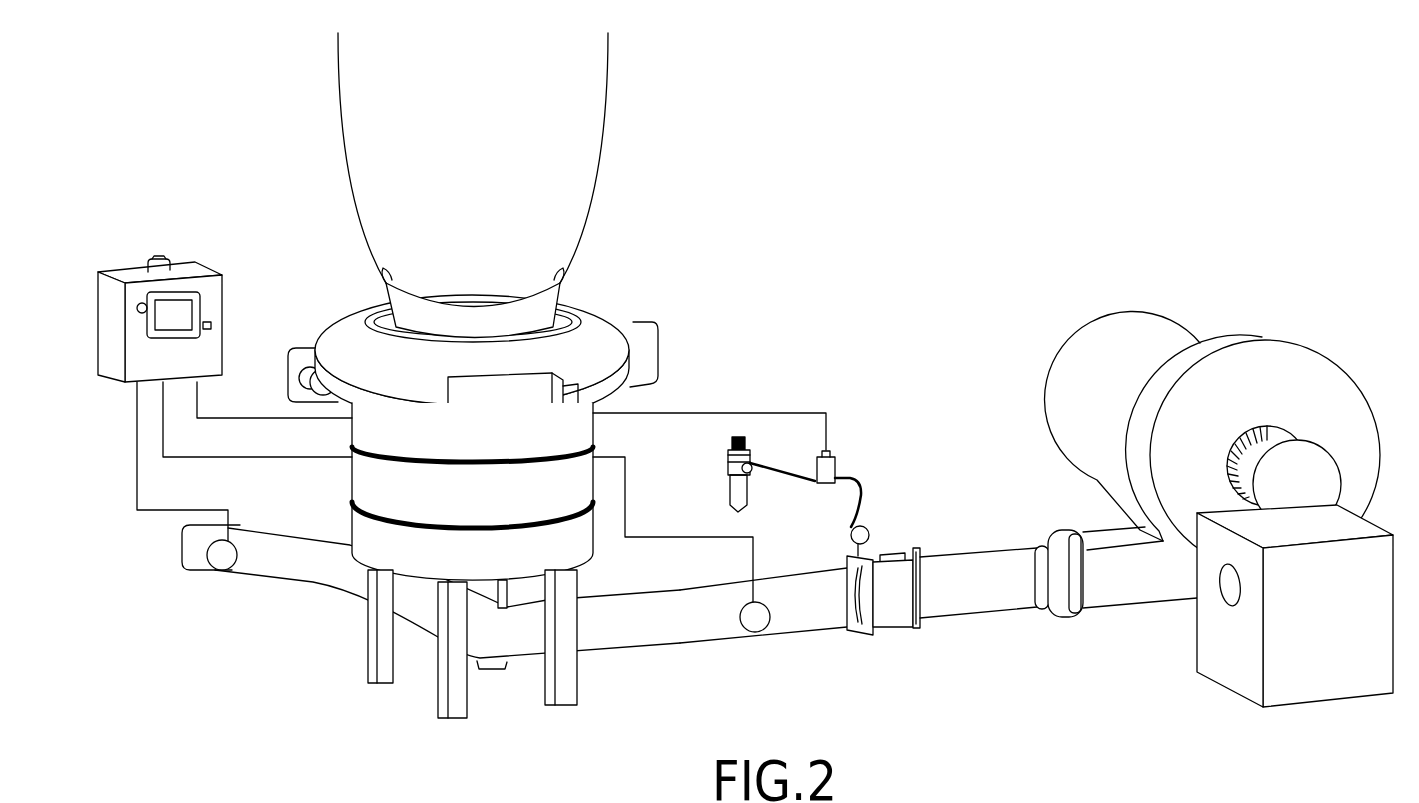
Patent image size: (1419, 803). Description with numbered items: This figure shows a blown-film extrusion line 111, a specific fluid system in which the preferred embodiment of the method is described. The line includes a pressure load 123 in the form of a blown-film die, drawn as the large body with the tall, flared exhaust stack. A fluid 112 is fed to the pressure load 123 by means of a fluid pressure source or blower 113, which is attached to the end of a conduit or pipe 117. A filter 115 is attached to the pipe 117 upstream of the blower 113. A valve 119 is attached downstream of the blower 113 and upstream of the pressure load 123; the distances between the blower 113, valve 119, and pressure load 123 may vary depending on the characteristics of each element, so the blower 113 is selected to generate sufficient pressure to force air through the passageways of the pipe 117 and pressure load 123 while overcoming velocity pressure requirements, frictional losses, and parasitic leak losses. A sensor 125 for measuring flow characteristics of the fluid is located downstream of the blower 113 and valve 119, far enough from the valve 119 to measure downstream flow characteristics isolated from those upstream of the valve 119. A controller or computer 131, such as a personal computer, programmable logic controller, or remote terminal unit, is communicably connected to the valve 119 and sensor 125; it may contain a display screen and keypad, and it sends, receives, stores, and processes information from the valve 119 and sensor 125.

The blown-film extrusion line 111 is at (727, 228).
The fluid 112 is at (1040, 333).
The blower 113 is at (1307, 370).
The filter 115 is at (1137, 333).
The pipe 117 is at (1007, 567).
The valve 119 is at (908, 633).
The pressure load 123 is at (469, 237).
The sensor 125 is at (772, 640).
The controller or computer 131 is at (227, 282).